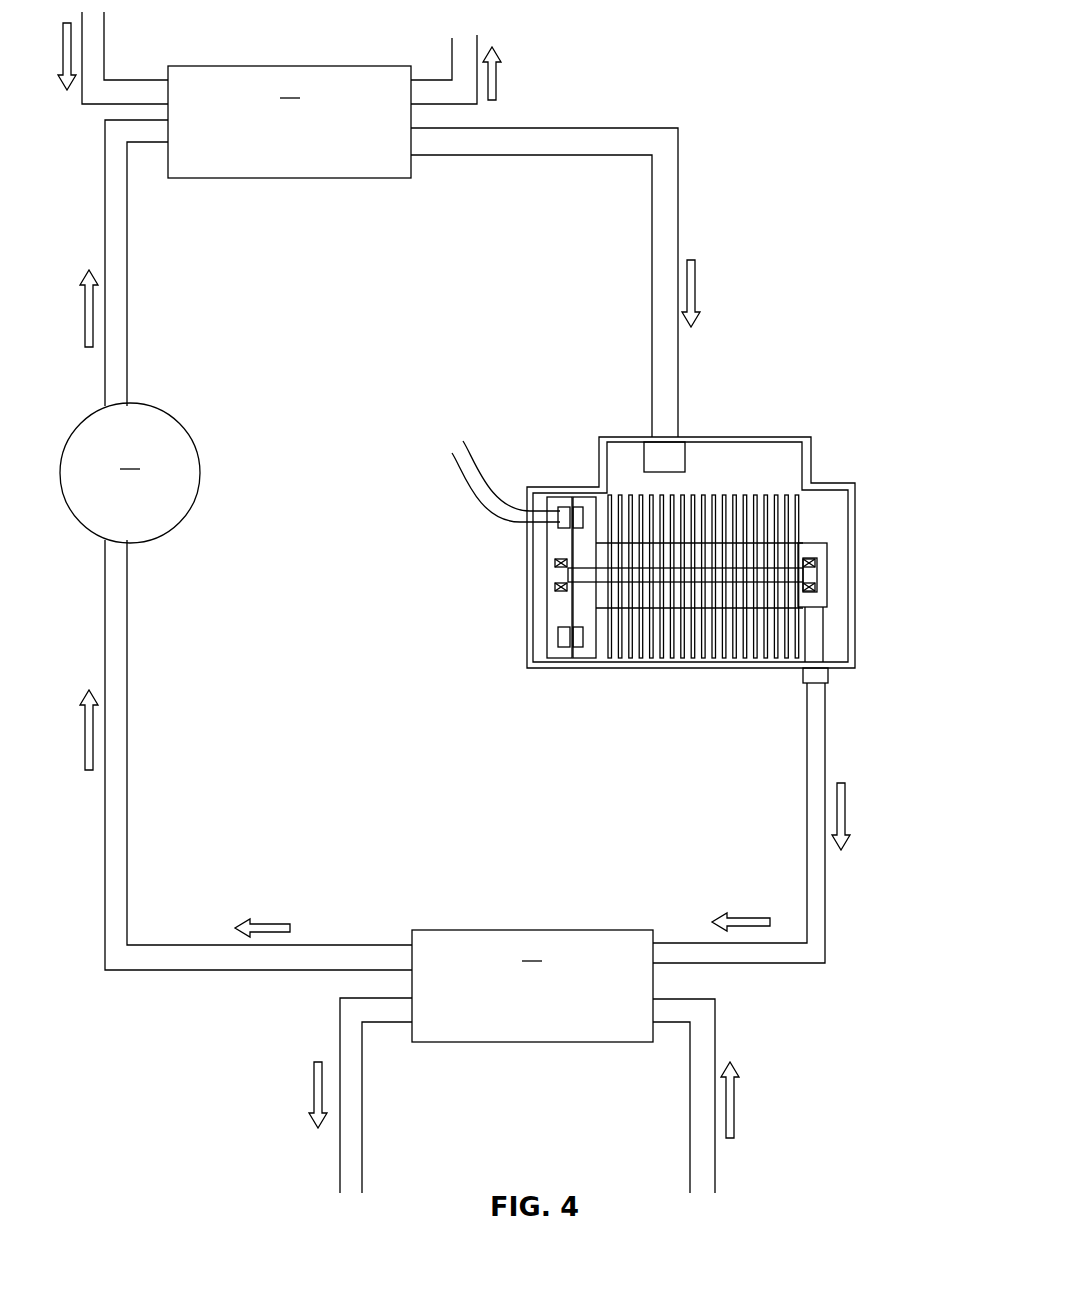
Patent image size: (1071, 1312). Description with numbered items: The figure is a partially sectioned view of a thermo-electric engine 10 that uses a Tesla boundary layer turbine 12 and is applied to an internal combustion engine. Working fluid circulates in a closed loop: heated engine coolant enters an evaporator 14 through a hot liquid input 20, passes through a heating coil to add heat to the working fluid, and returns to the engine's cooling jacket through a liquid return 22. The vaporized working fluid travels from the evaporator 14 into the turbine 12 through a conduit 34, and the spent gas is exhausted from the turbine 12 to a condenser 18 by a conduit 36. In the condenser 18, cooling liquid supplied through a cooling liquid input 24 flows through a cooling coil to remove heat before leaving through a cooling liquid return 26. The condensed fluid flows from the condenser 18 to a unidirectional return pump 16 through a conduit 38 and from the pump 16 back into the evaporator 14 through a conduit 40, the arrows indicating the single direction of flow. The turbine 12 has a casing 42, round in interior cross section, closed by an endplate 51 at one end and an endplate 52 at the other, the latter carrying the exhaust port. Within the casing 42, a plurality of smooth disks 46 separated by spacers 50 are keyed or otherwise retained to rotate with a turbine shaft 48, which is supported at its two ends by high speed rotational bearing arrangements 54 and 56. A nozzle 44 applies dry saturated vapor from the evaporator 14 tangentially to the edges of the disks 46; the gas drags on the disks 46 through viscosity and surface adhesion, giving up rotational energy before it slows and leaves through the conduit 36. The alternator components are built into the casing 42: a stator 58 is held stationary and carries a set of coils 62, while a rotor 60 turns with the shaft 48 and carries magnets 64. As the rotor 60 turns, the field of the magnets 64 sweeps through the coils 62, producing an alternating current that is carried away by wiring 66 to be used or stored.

The thermo-electric engine 10 is at (745, 117).
The turbine 12 is at (668, 552).
The evaporator 14 is at (289, 122).
The return pump 16 is at (130, 473).
The condenser 18 is at (532, 986).
The hot liquid input 20 is at (105, 24).
The liquid return 22 is at (477, 42).
The cooling liquid input 24 is at (715, 1017).
The cooling liquid return 26 is at (340, 1025).
The conduit 34 is at (678, 345).
The conduit 36 is at (808, 822).
The conduit 38 is at (127, 738).
The conduit 40 is at (127, 252).
The casing 42 is at (748, 437).
The nozzle 44 is at (685, 468).
The smooth disks 46 is at (622, 497).
The turbine shaft 48 is at (668, 578).
The spacers 50 is at (723, 595).
The endplate 51 is at (527, 637).
The endplate 52 is at (855, 492).
The high speed rotational bearing arrangement 54 is at (812, 556).
The high speed rotational bearing arrangement 56 is at (555, 570).
The stator 58 is at (562, 502).
The rotor 60 is at (582, 653).
The coils 62 is at (562, 530).
The magnets 64 is at (582, 637).
The wiring 66 is at (462, 483).